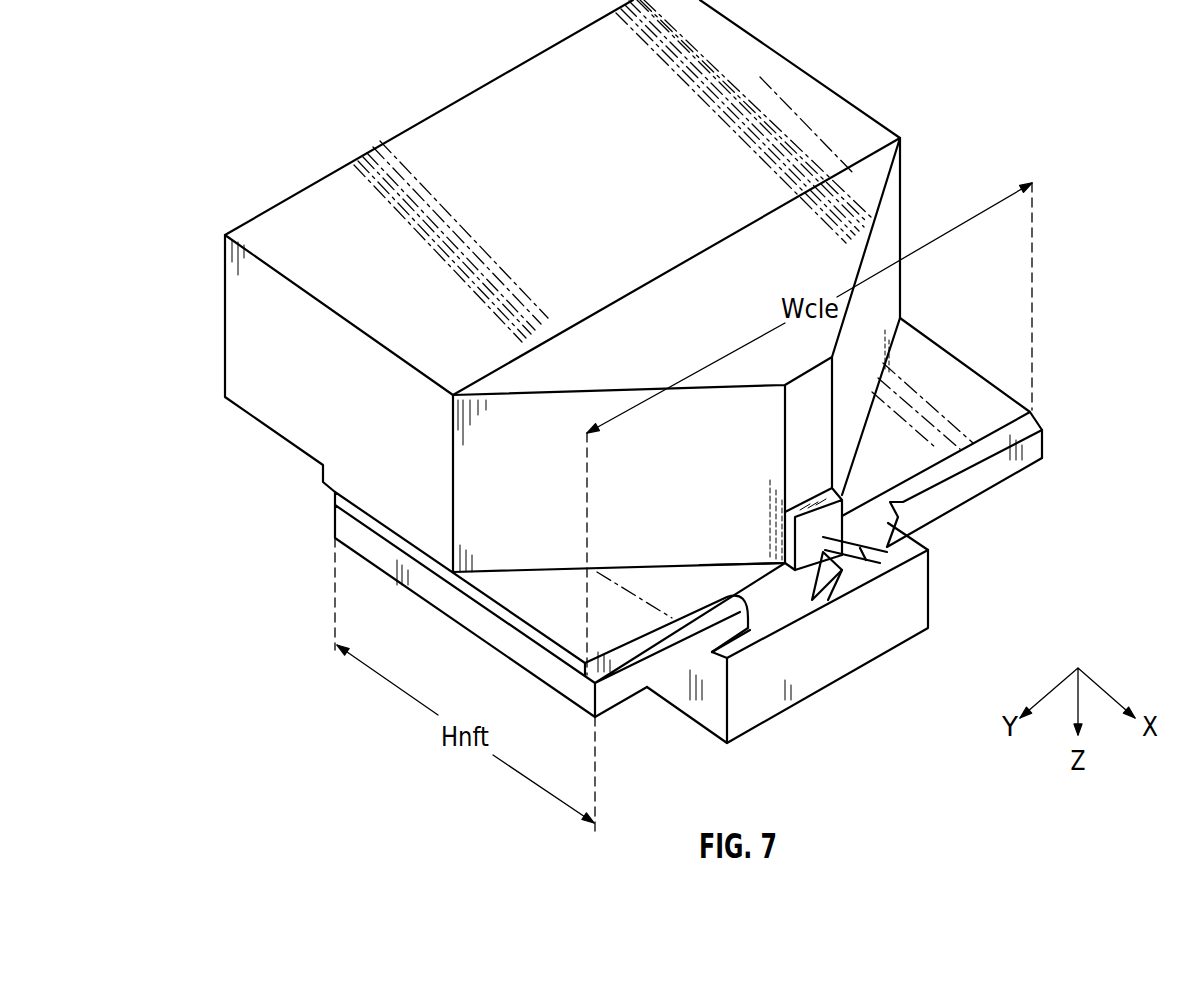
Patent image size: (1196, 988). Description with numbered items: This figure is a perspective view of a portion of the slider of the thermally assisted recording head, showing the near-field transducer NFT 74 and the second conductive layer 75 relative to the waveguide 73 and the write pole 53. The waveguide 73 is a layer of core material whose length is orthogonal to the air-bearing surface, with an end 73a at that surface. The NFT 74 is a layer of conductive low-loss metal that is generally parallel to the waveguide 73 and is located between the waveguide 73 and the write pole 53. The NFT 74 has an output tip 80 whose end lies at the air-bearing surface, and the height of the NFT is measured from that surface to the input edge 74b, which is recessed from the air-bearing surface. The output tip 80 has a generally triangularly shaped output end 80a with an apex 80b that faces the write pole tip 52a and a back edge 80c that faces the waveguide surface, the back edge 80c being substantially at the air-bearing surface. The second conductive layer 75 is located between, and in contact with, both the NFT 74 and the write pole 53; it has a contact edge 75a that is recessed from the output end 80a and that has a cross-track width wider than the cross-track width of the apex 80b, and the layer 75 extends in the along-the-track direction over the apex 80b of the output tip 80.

The write pole 53 is at (452, 118).
The NFT 74 is at (467, 613).
The input edge 74b is at (335, 522).
The second conductive layer 75 is at (958, 375).
The contact edge 75a is at (940, 468).
The output tip 80 is at (773, 565).
The output end 80a is at (838, 582).
The apex 80b is at (797, 518).
The back edge 80c is at (832, 600).
The pole tip 52a is at (855, 545).
The waveguide 73 is at (703, 708).
The end 73a is at (827, 675).